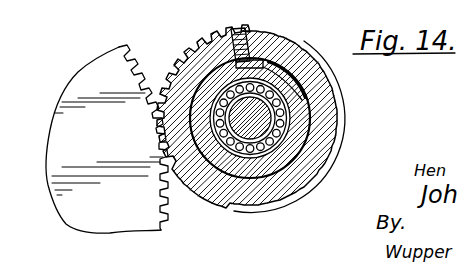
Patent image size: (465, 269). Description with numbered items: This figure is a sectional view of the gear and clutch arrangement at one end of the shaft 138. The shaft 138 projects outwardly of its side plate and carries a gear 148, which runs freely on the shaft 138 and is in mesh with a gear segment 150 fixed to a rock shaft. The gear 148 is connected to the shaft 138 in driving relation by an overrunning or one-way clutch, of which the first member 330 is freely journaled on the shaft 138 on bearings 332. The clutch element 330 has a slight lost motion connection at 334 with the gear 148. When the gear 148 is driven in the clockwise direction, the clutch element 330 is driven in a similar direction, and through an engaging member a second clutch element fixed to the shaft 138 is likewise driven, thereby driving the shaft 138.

The gear segment 150 is at (98, 82).
The gear 148 is at (194, 36).
The lost motion connection 334 is at (304, 17).
The first clutch member 330 is at (295, 99).
The bearings 332 is at (270, 146).
The shaft 138 is at (285, 152).